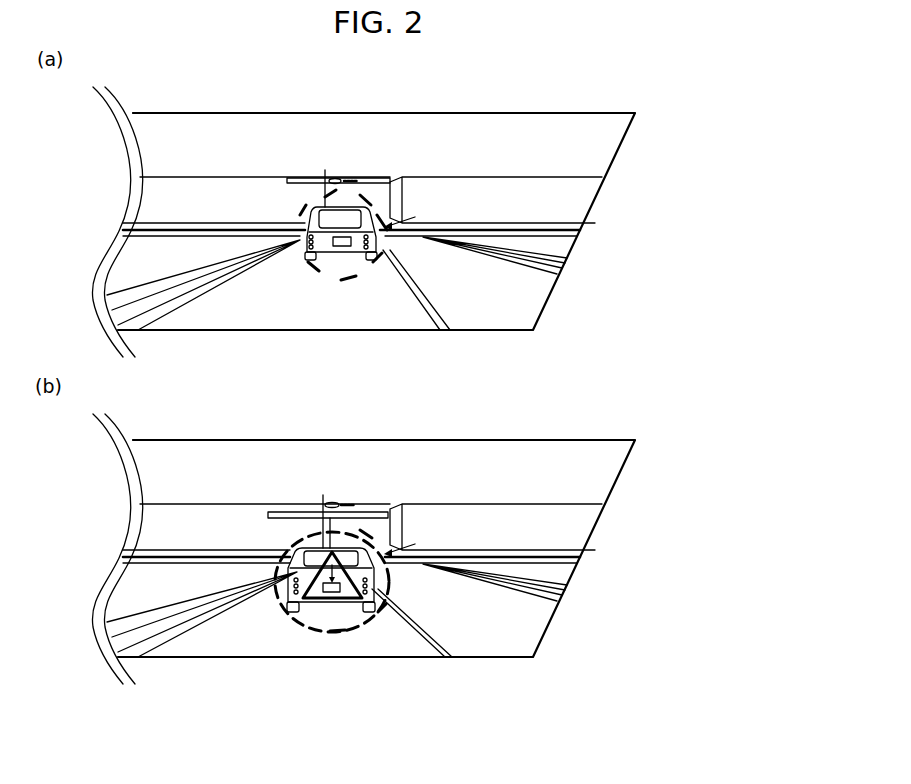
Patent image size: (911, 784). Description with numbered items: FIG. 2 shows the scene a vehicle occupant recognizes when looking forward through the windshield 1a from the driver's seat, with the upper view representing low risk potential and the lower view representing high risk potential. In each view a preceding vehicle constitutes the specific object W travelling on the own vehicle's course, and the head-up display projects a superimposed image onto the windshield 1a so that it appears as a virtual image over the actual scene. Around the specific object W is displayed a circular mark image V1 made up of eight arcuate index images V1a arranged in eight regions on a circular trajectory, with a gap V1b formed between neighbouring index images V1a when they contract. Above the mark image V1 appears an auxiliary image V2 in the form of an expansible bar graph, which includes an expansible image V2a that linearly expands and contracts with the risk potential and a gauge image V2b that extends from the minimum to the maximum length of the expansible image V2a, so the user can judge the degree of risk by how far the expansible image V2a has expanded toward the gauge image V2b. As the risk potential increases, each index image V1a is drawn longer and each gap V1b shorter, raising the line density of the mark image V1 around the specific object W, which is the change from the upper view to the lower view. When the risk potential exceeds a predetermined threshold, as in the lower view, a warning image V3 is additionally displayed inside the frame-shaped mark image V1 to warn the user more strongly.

The windshield 1a is at (543, 113).
The mark image V1 is at (304, 271).
The index image V1a is at (389, 263).
The gap V1b is at (364, 272).
The auxiliary image V2 is at (278, 174).
The expansible image V2a is at (288, 177).
The gauge image V2b is at (373, 180).
The specific object W is at (357, 217).
The warning image V3 is at (367, 562).